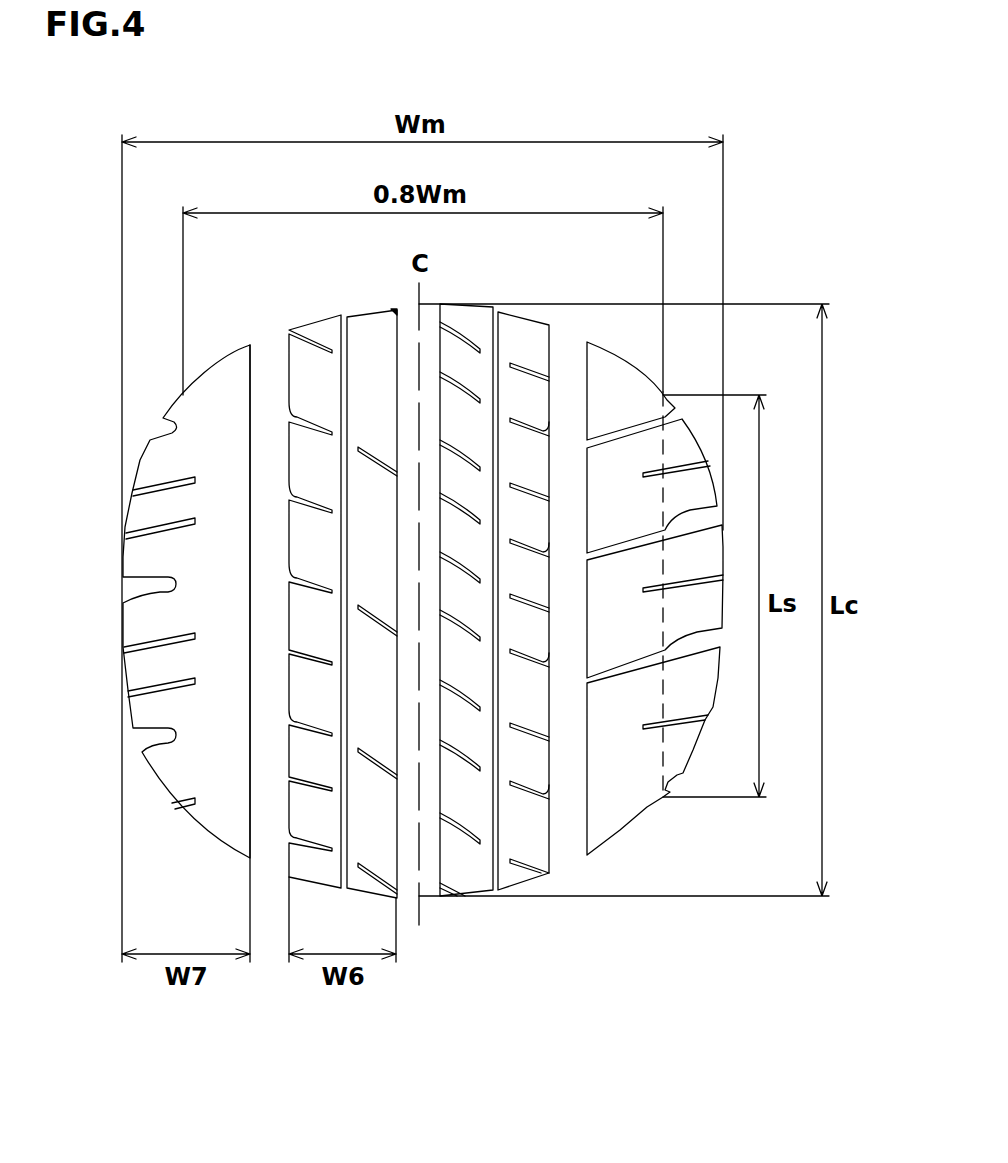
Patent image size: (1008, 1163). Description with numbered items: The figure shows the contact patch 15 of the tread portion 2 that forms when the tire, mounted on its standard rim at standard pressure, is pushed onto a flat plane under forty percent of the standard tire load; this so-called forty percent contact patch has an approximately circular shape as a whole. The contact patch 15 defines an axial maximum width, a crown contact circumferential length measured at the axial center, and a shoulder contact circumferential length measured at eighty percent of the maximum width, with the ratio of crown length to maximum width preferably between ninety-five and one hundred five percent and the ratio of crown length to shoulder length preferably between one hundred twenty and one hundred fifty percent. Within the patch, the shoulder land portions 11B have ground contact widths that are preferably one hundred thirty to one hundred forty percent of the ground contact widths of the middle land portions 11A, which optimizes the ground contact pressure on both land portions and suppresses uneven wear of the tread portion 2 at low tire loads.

The tread portion 2 is at (461, 507).
The contact patch 15 is at (740, 279).
The middle land portion 11A is at (313, 620).
The shoulder land portion 11B is at (197, 498).